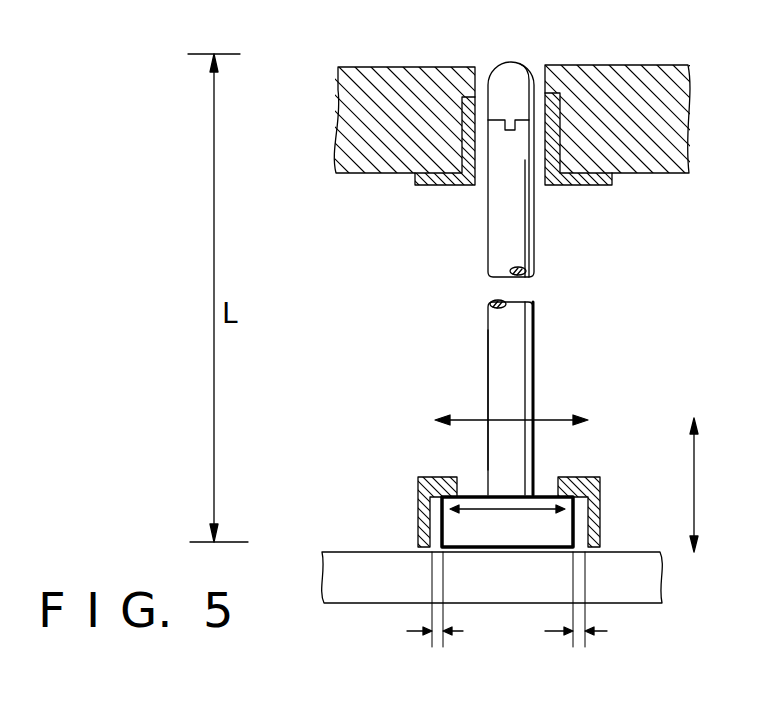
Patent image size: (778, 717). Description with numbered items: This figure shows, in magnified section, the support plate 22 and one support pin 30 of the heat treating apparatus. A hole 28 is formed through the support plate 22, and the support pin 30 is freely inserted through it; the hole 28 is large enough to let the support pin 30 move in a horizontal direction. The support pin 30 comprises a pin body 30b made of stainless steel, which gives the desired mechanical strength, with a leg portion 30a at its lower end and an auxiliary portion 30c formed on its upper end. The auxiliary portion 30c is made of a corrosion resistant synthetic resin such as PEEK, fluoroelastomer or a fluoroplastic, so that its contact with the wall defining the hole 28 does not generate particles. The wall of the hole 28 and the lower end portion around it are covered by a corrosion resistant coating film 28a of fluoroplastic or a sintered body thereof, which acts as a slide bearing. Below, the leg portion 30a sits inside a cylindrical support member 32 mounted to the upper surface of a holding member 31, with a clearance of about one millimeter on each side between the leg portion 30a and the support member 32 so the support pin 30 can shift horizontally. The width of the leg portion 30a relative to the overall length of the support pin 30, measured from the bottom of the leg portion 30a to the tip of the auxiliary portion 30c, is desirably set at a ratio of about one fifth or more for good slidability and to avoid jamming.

The support plate 22 is at (668, 128).
The hole 28 is at (486, 80).
The corrosion resistant coating film 28a is at (540, 160).
The support pin 30 is at (482, 232).
The leg portion 30a is at (488, 540).
The pin body 30b is at (516, 376).
The auxiliary portion 30c is at (512, 70).
The holding member 31 is at (362, 583).
The cylindrical support member 32 is at (418, 492).